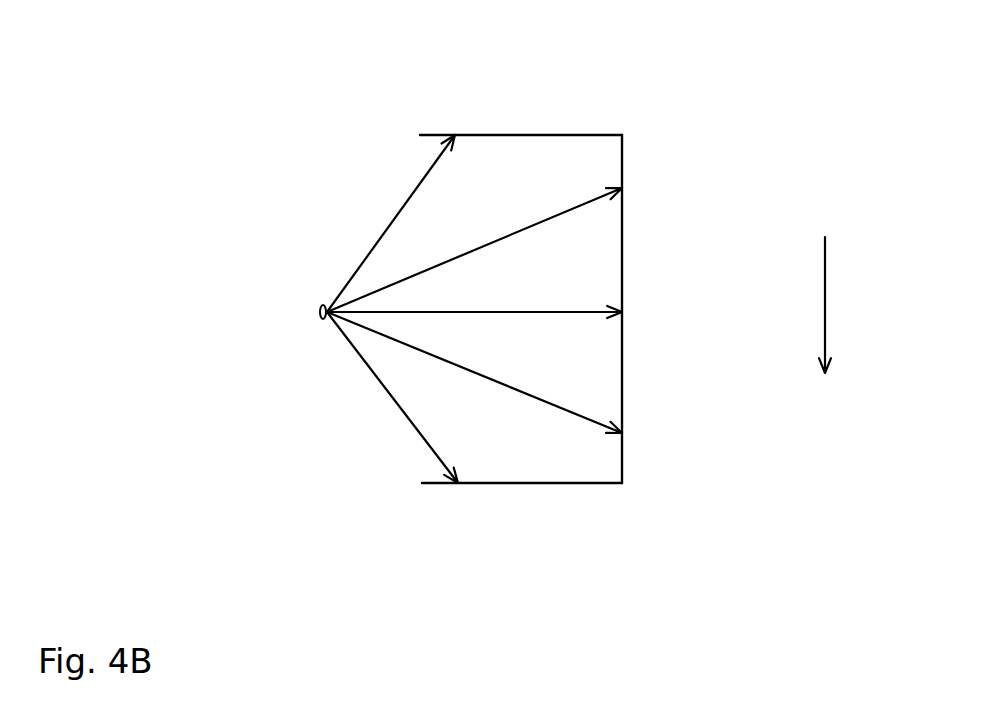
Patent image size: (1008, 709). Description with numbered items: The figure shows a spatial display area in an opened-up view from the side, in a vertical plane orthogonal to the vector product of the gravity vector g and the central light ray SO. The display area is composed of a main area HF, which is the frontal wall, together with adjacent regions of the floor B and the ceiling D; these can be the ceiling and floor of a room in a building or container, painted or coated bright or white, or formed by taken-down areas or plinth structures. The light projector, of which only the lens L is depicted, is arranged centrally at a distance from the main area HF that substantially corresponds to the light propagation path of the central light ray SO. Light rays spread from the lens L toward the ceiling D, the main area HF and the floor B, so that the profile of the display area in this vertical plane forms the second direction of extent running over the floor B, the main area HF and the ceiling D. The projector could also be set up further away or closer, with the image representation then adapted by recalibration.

The lens L is at (318, 313).
The central light ray SO is at (500, 308).
The ceiling D is at (464, 127).
The floor B is at (439, 492).
The main area HF is at (622, 312).
The gravity vector g is at (844, 305).